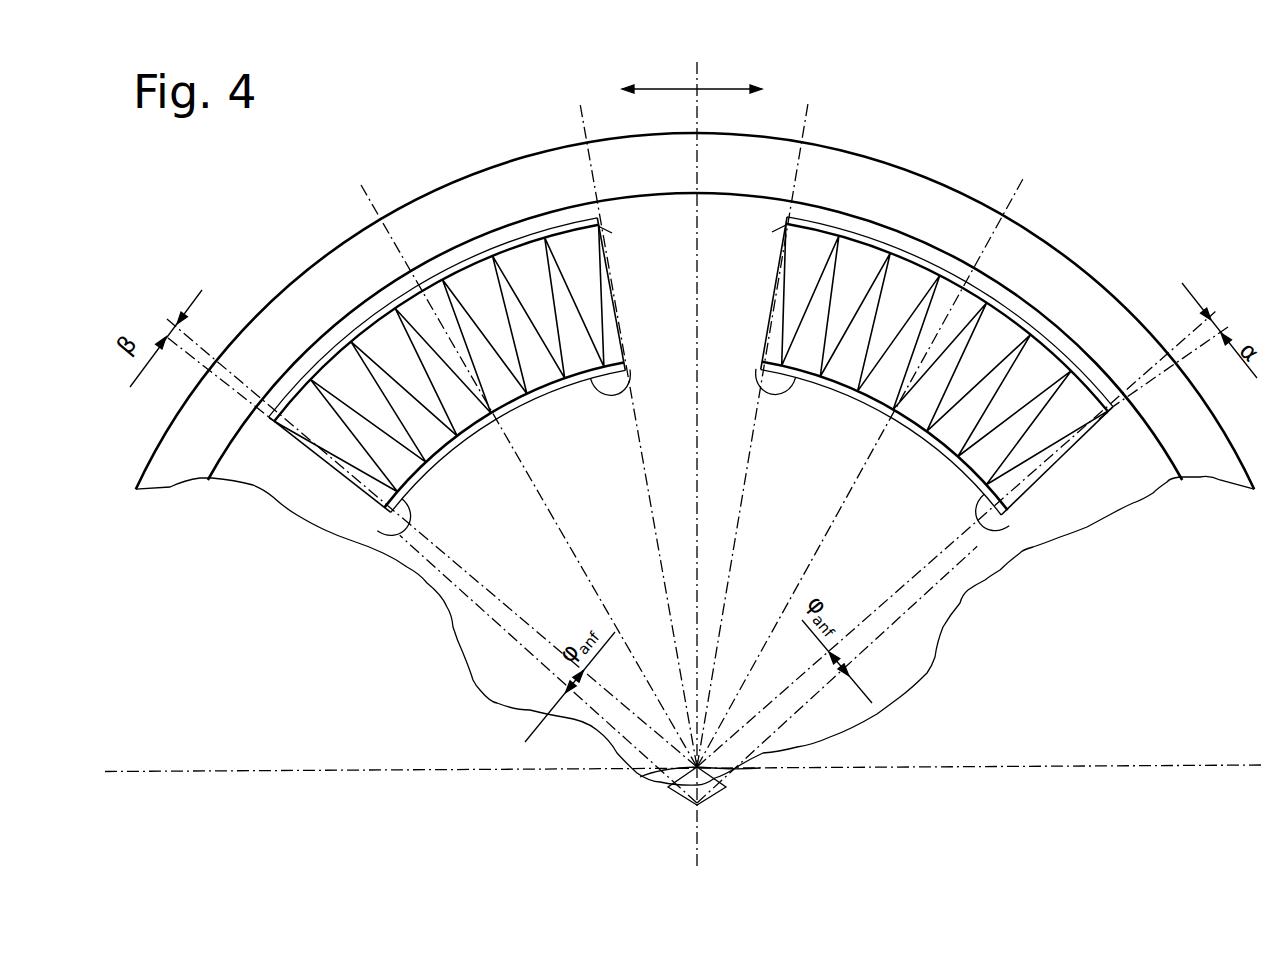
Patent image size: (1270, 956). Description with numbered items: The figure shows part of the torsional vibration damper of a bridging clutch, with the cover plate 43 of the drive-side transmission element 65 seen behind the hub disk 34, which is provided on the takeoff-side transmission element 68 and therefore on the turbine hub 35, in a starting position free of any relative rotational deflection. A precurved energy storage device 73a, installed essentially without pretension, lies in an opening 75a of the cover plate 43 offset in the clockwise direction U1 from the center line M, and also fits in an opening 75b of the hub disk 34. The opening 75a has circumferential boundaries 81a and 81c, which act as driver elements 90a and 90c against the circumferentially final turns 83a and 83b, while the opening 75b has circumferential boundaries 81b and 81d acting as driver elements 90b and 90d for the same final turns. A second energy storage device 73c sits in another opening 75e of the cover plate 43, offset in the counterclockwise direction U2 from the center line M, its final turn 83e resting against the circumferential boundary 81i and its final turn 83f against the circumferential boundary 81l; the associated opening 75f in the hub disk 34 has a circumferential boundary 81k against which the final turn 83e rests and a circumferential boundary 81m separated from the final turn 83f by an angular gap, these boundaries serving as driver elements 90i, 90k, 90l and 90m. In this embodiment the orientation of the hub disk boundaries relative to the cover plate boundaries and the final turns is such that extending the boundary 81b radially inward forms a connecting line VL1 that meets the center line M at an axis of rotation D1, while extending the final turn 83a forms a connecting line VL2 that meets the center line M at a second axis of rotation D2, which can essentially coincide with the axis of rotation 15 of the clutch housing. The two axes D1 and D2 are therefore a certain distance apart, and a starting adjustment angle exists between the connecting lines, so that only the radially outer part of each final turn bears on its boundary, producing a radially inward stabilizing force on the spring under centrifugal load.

The axis of rotation 15 is at (665, 776).
The hub disk 34 is at (552, 586).
The turbine hub 35 is at (305, 520).
The cover plate 43 is at (1070, 290).
The drive-side transmission element 65 is at (903, 195).
The takeoff-side transmission element 68 is at (772, 212).
The energy storage device 73a is at (967, 400).
The energy storage device 73c is at (522, 356).
The opening 75a is at (1102, 330).
The opening 75b is at (1044, 288).
The opening 75e is at (385, 335).
The opening 75f is at (478, 250).
The circumferential boundary 81a is at (773, 296).
The circumferential boundary 81b is at (763, 352).
The circumferential boundary 81c is at (1075, 443).
The circumferential boundary 81d is at (1035, 495).
The circumferential boundary 81i is at (604, 230).
The circumferential boundary 81k is at (620, 314).
The circumferential boundary 81l is at (368, 505).
The circumferential boundary 81m is at (292, 450).
The circumferentially final turn 83a is at (781, 270).
The circumferentially final turn 83b is at (1055, 463).
The circumferentially final turn 83e is at (613, 280).
The circumferentially final turn 83f is at (298, 472).
The driver element 90a is at (784, 243).
The driver element 90b is at (766, 324).
The driver element 90c is at (1100, 428).
The driver element 90d is at (1000, 530).
The driver element 90i is at (606, 256).
The driver element 90k is at (630, 352).
The driver element 90l is at (398, 528).
The driver element 90m is at (203, 478).
The center line M is at (680, 853).
The axis of rotation D1 is at (700, 810).
The axis of rotation D2 is at (712, 780).
The clockwise direction U1 is at (724, 74).
The counterclockwise direction U2 is at (659, 74).
The connecting line VL1 is at (704, 660).
The connecting line VL2 is at (869, 584).